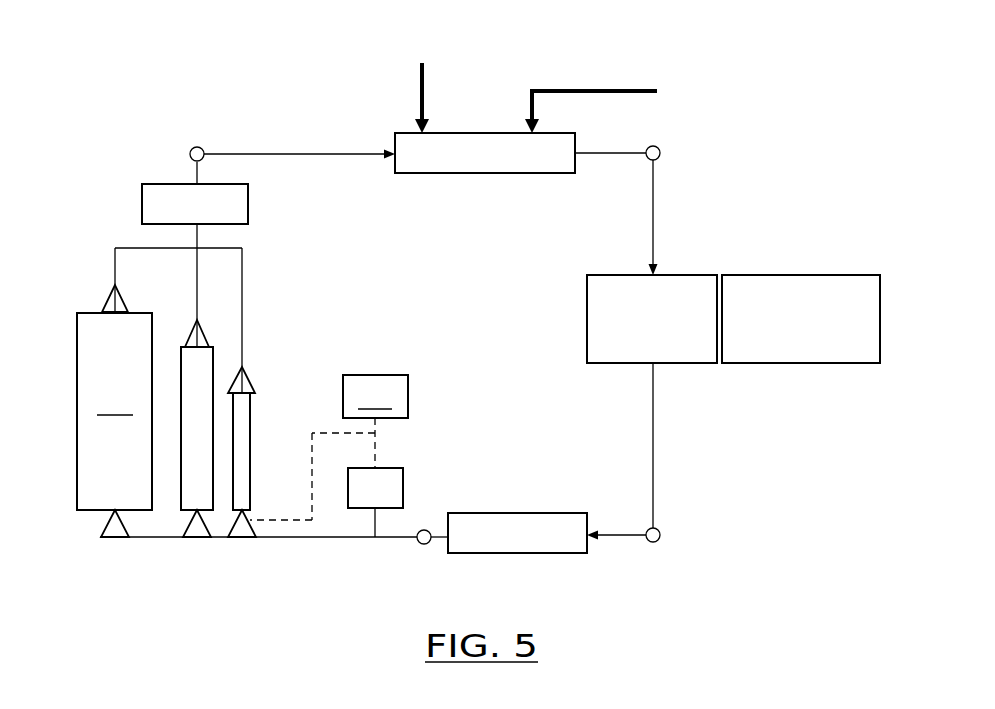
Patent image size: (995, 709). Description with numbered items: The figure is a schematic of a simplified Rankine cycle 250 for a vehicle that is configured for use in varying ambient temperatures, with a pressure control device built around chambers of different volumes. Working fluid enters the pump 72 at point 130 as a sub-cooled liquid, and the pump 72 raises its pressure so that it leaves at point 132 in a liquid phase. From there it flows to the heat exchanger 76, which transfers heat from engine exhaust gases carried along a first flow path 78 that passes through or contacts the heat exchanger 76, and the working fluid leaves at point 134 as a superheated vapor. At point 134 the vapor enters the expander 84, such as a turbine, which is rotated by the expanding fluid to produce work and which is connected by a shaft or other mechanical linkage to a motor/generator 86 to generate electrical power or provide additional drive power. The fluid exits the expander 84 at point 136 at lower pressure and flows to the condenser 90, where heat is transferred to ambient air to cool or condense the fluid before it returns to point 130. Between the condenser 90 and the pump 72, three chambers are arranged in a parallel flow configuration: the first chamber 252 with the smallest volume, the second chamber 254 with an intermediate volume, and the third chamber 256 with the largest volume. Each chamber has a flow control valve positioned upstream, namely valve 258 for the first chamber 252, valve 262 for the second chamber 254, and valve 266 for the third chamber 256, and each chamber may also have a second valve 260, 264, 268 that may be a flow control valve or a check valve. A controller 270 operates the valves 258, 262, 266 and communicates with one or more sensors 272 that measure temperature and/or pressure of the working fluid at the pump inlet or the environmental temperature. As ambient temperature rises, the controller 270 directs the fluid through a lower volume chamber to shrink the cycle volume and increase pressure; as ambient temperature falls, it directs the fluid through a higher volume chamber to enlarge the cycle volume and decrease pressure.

The cycle 250 is at (152, 86).
The point 132 is at (190, 152).
The pump 72 is at (142, 197).
The heat exchanger 76 is at (485, 133).
The first flow path 78 is at (587, 91).
The point 134 is at (660, 152).
The expander 84 is at (695, 275).
The motor/generator 86 is at (800, 275).
The condenser 90 is at (548, 513).
The point 136 is at (662, 533).
The point 130 is at (421, 547).
The controller 270 is at (375, 396).
The sensors 272 is at (403, 488).
The third chamber 256 is at (114, 411).
The second valve 268 is at (110, 303).
The flow control valve 266 is at (103, 525).
The flow control valve 262 is at (188, 523).
The second valve 264 is at (207, 331).
The second chamber 254 is at (172, 336).
The flow control valve 258 is at (248, 525).
The second valve 260 is at (246, 387).
The first chamber 252 is at (257, 397).